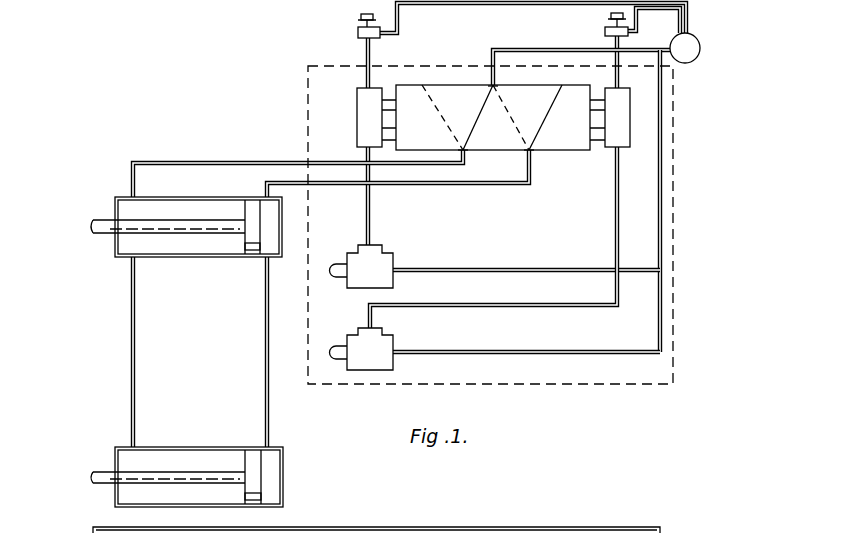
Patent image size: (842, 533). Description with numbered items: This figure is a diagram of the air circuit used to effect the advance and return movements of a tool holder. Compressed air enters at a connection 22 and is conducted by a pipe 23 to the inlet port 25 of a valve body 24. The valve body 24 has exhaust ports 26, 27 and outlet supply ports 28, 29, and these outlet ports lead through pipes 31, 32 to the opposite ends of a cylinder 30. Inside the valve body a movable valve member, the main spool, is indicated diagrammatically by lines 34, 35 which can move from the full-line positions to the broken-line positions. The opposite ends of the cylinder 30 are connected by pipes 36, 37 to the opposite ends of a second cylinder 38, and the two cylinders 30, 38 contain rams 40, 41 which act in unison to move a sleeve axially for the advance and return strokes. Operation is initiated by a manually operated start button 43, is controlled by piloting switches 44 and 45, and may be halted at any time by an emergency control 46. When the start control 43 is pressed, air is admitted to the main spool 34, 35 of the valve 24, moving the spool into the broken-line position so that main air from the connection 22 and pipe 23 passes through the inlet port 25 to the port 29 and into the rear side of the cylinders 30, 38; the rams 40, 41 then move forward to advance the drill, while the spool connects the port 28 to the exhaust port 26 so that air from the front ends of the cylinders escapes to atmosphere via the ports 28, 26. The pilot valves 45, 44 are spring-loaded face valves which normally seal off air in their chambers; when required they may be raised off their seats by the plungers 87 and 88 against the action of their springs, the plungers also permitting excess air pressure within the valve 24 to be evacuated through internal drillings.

The connection 22 is at (672, 38).
The pipe 23 is at (553, 50).
The valve body 24 is at (569, 151).
The inlet port 25 is at (495, 86).
The exhaust port 26 is at (423, 85).
The exhaust port 27 is at (556, 88).
The outlet supply port 28 is at (466, 150).
The outlet supply port 29 is at (532, 150).
The cylinder 30 is at (190, 258).
The pipe 31 is at (222, 163).
The pipe 32 is at (318, 184).
The valve member line 34 is at (481, 120).
The valve member line 35 is at (543, 126).
The pipe 36 is at (135, 326).
The pipe 37 is at (268, 322).
The cylinder 38 is at (218, 447).
The ram 40 is at (104, 235).
The ram 41 is at (106, 472).
The start button 43 is at (608, 20).
The piloting switch 44 is at (382, 352).
The piloting switch 45 is at (385, 268).
The emergency control 46 is at (360, 21).
The plunger 87 is at (338, 268).
The plunger 88 is at (332, 342).